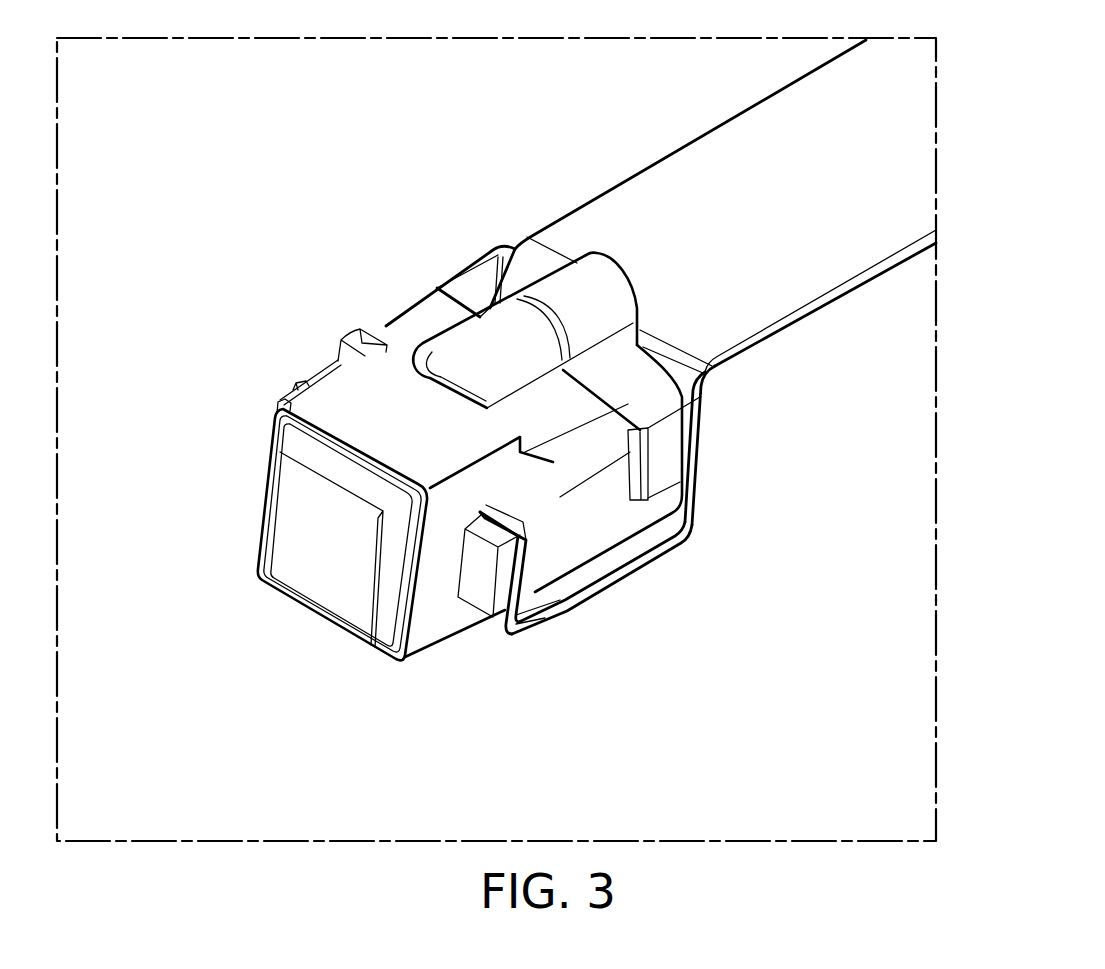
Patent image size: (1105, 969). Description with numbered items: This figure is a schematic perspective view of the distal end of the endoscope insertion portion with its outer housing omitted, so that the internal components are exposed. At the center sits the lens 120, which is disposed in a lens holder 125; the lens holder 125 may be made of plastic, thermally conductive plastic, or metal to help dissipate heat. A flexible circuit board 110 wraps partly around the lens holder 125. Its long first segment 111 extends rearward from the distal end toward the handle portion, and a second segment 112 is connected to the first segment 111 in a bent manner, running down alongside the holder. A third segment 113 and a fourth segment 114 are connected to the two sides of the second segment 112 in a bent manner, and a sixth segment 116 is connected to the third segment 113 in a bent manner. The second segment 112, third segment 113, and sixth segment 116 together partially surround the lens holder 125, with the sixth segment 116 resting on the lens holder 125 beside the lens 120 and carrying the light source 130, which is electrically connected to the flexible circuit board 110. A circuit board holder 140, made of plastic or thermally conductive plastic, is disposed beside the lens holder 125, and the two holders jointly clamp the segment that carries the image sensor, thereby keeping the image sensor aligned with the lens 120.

The flexible circuit board 110 is at (735, 363).
The first segment 111 is at (838, 293).
The second segment 112 is at (705, 452).
The third segment 113 is at (633, 574).
The fourth segment 114 is at (470, 272).
The sixth segment 116 is at (545, 600).
The lens 120 is at (341, 577).
The lens holder 125 is at (435, 648).
The light source 130 is at (480, 600).
The circuit board holder 140 is at (657, 468).